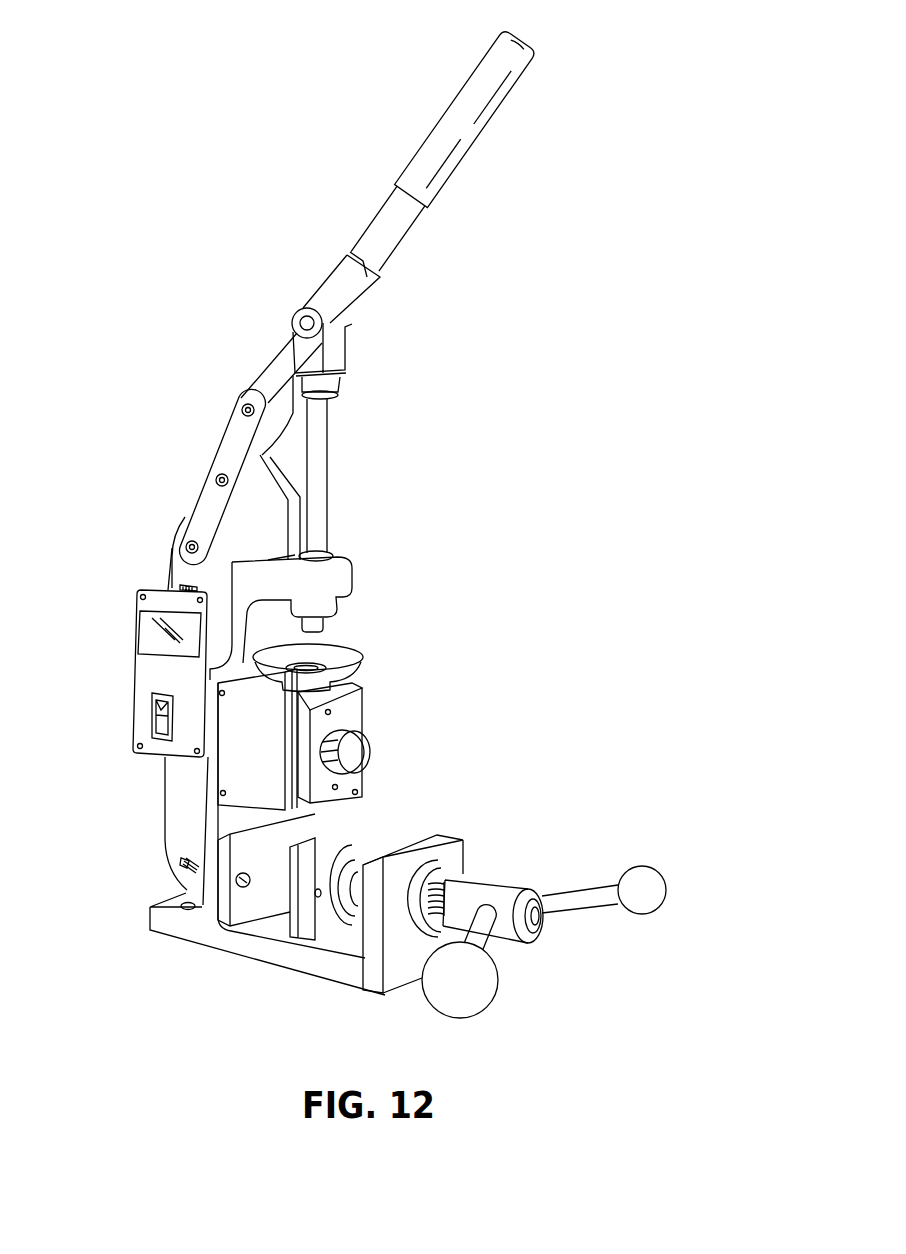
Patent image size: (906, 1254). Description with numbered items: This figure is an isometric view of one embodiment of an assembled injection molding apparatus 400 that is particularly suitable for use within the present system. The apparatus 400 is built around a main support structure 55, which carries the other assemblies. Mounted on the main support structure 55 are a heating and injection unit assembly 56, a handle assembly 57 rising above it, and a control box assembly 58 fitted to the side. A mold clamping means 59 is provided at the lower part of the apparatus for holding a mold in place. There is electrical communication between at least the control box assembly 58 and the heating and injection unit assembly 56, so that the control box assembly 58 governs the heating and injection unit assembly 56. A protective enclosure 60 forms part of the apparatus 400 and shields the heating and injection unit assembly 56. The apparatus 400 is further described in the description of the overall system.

The injection molding apparatus 400 is at (677, 13).
The main support structure 55 is at (255, 945).
The heating and injection unit assembly 56 is at (358, 681).
The handle assembly 57 is at (275, 362).
The control box assembly 58 is at (157, 675).
The mold clamping means 59 is at (390, 832).
The protective enclosure 60 is at (253, 773).